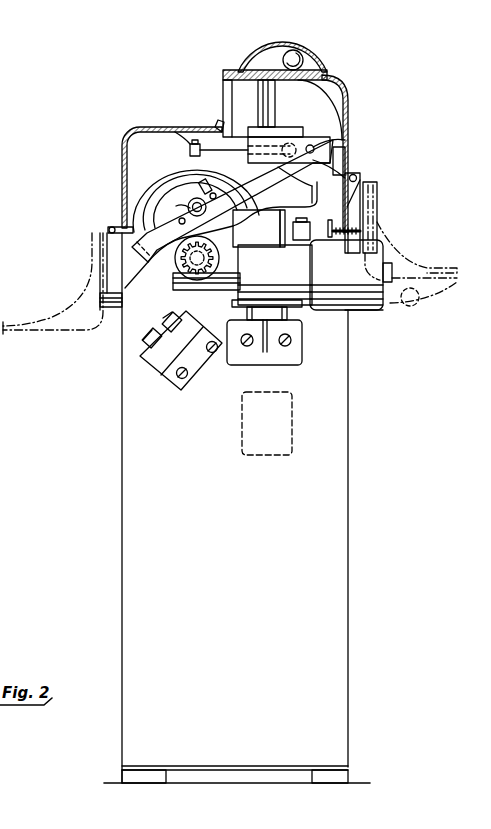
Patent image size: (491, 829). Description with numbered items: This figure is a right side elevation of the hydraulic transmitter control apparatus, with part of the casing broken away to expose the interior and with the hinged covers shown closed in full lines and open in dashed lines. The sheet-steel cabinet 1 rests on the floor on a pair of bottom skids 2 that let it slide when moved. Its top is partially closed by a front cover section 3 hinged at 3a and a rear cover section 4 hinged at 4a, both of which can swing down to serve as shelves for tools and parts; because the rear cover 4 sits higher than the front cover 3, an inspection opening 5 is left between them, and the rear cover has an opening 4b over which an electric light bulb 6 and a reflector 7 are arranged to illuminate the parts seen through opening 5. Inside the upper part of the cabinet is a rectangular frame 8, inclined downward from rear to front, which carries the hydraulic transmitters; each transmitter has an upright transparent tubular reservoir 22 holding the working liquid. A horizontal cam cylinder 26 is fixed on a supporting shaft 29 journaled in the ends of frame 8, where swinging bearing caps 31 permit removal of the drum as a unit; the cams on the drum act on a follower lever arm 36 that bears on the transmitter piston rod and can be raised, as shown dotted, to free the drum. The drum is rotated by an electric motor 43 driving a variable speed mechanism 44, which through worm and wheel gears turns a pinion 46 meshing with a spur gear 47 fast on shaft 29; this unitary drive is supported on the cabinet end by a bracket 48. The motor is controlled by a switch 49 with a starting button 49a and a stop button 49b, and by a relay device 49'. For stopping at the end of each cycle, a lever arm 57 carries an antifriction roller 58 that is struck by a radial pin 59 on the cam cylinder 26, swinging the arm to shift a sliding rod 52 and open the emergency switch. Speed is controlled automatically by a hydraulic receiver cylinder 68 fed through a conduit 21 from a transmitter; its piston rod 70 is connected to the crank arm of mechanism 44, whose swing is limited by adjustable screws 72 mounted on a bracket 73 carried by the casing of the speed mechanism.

The cabinet 1 is at (122, 474).
The bottom skids 2 is at (145, 777).
The front cover section 3 is at (136, 128).
The hinge of front cover 3a is at (110, 227).
The rear cover section 4 is at (349, 114).
The hinge of rear cover 4a is at (360, 178).
The opening in cover top 4b is at (320, 86).
The inspection opening 5 is at (233, 122).
The electric light bulb 6 is at (284, 58).
The reflector 7 is at (306, 52).
The rectangular frame 8 is at (134, 258).
The conduit 21 is at (320, 201).
The tubular reservoir 22 is at (276, 112).
The cam cylinder 26 is at (133, 202).
The supporting shaft 29 is at (193, 200).
The swinging bearing caps 31 is at (180, 210).
The follower lever arm 36 is at (253, 130).
The electric motor 43 is at (358, 309).
The variable speed mechanism 44 is at (294, 300).
The pinion 46 is at (198, 282).
The spur gear 47 is at (232, 262).
The bracket 48 is at (297, 345).
The switch device 49 is at (181, 363).
The starting button 49a is at (143, 340).
The stop button 49b is at (160, 318).
The relay device 49' is at (245, 438).
The sliding rod 52 is at (318, 146).
The lever arm 57 is at (216, 127).
The antifriction roller 58 is at (190, 150).
The radial pin 59 is at (188, 132).
The receiver cylinder 68 is at (270, 238).
The piston rod 70 is at (300, 224).
The adjustable screws 72 is at (345, 231).
The bracket 73 is at (325, 241).